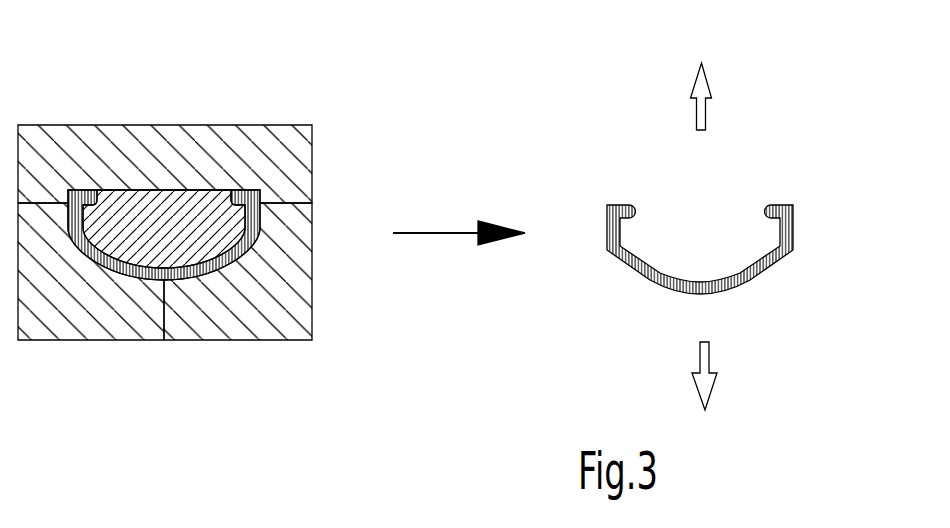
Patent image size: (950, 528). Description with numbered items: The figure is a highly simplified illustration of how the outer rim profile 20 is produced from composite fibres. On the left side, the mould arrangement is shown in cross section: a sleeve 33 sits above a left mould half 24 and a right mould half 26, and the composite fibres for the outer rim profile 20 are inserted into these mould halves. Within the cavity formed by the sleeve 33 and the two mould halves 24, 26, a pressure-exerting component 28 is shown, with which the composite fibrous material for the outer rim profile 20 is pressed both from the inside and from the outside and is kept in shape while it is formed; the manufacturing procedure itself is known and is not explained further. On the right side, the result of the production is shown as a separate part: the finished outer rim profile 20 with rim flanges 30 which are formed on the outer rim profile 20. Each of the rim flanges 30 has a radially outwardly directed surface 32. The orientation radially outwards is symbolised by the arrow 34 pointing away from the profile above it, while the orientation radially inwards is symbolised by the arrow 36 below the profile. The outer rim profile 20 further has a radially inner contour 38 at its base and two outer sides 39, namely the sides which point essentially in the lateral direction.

The outer rim profile 20 is at (247, 242).
The left mould half 24 is at (88, 312).
The right mould half 26 is at (250, 317).
The pressure-exerting component 28 is at (165, 212).
The rim flanges 30 is at (735, 182).
The radially outwardly directed surface 32 is at (627, 205).
The sleeve 33 is at (142, 153).
The arrow 34 is at (703, 110).
The arrow 36 is at (707, 356).
The radially inner contour 38 is at (668, 296).
The outer sides 39 is at (607, 237).